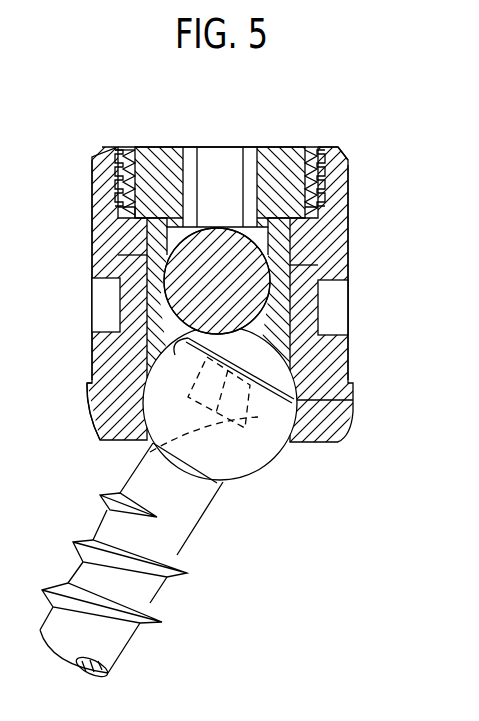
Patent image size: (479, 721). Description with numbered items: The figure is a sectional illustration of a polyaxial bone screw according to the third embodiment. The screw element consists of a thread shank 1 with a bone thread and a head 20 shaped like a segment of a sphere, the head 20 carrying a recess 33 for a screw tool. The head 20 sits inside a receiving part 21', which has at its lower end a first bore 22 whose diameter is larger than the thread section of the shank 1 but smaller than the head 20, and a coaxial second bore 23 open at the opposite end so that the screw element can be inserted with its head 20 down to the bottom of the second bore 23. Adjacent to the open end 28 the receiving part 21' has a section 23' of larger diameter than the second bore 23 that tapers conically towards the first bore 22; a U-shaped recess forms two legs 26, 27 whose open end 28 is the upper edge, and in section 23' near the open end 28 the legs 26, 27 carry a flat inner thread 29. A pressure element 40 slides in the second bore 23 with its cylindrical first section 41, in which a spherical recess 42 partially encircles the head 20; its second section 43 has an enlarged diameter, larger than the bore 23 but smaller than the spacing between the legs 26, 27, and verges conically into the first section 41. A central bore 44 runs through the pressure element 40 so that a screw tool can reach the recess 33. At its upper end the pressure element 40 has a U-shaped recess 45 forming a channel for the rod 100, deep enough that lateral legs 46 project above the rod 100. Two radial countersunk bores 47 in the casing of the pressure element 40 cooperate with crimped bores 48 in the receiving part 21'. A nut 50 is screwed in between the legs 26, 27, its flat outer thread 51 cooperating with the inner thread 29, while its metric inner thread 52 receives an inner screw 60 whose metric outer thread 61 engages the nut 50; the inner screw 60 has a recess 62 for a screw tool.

The thread shank 1 is at (163, 592).
The head 20 is at (230, 460).
The receiving part 21' is at (389, 272).
The first bore 22 is at (280, 440).
The second bore 23 is at (349, 414).
The section 23' is at (288, 309).
The leg 26 is at (92, 182).
The leg 27 is at (350, 183).
The open end 28 is at (330, 148).
The inner thread 29 is at (352, 167).
The recess 33 is at (150, 452).
The pressure element 40 is at (92, 347).
The first section 41 is at (97, 288).
The recess 42 is at (102, 407).
The second section 43 is at (118, 255).
The central bore 44 is at (92, 367).
The U-shaped recess 45 is at (328, 266).
The lateral legs 46 is at (125, 232).
The countersunk bores 47 is at (100, 317).
The crimped bores 48 is at (330, 317).
The nut 50 is at (138, 146).
The outer thread 51 is at (112, 156).
The inner thread 52 is at (126, 145).
The inner screw 60 is at (267, 150).
The outer thread 61 is at (170, 146).
The recess 62 is at (212, 158).
The rod 100 is at (248, 288).